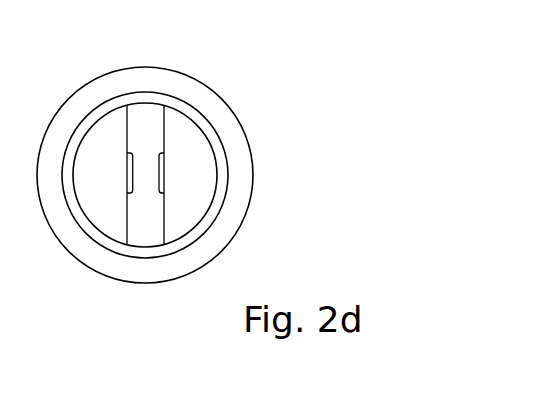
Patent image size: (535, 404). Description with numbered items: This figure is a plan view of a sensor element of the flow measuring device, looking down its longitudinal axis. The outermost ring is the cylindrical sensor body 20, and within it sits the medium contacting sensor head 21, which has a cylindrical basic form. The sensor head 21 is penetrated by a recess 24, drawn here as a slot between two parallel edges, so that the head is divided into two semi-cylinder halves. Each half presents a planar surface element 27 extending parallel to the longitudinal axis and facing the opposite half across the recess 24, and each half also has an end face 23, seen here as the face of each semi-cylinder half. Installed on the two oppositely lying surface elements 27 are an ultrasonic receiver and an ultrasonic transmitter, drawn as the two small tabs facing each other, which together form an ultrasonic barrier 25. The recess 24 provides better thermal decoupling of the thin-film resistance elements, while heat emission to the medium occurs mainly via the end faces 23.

The cylindrical sensor body 20 is at (223, 242).
The sensor head 21 is at (200, 205).
The end face 23 is at (188, 136).
The recess 24 is at (147, 233).
The ultrasonic barrier 25 is at (165, 167).
The surface element 27 is at (127, 135).